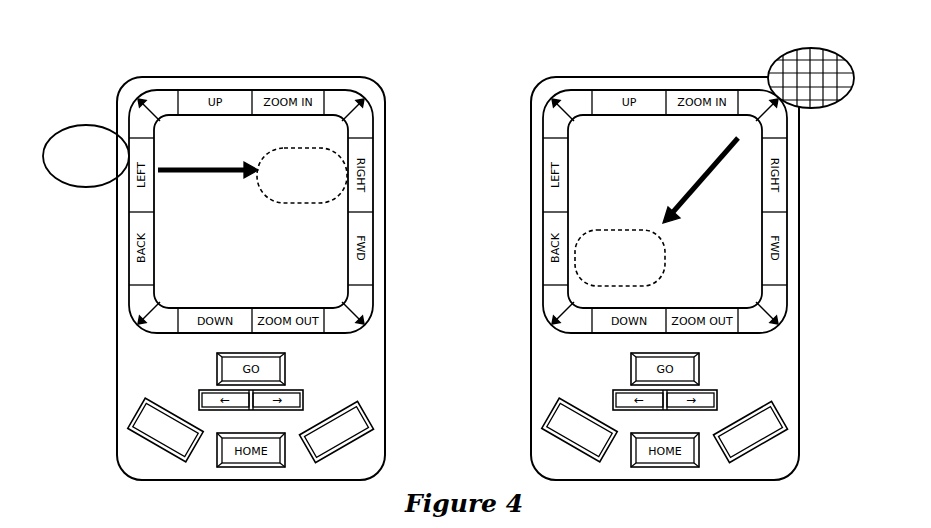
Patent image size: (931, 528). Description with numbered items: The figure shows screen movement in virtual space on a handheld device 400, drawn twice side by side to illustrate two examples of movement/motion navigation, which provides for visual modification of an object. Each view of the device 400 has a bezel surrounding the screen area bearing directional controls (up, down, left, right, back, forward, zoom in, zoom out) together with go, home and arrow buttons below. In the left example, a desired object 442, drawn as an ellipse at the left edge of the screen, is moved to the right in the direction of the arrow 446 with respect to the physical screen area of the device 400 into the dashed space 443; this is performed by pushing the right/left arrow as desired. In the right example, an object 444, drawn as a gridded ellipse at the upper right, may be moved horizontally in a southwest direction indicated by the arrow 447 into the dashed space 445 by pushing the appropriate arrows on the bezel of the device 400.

The device 400 is at (123, 54).
The desired object 442 is at (97, 125).
The space 443 is at (323, 205).
The object 444 is at (783, 52).
The space 445 is at (627, 230).
The arrow 446 is at (238, 167).
The arrow 447 is at (712, 167).